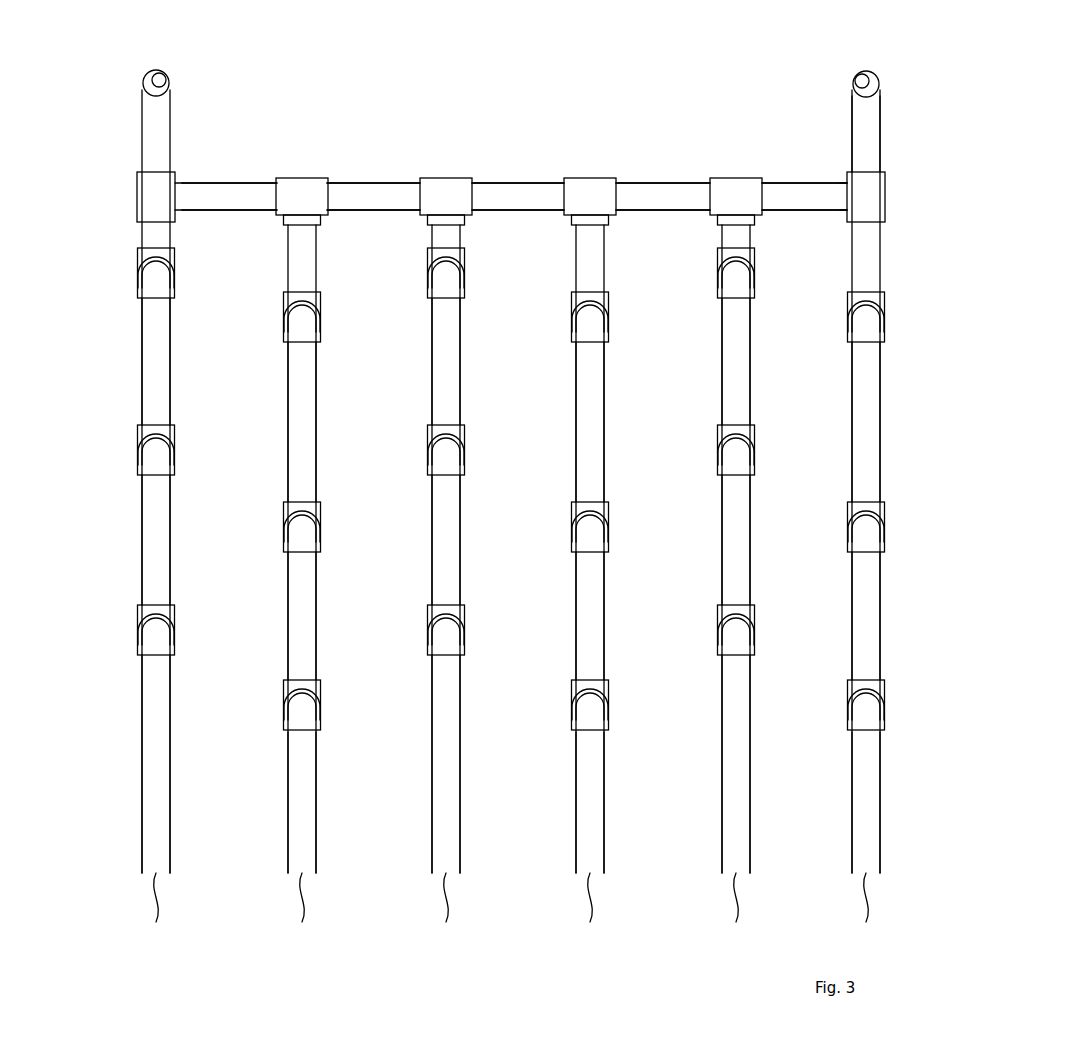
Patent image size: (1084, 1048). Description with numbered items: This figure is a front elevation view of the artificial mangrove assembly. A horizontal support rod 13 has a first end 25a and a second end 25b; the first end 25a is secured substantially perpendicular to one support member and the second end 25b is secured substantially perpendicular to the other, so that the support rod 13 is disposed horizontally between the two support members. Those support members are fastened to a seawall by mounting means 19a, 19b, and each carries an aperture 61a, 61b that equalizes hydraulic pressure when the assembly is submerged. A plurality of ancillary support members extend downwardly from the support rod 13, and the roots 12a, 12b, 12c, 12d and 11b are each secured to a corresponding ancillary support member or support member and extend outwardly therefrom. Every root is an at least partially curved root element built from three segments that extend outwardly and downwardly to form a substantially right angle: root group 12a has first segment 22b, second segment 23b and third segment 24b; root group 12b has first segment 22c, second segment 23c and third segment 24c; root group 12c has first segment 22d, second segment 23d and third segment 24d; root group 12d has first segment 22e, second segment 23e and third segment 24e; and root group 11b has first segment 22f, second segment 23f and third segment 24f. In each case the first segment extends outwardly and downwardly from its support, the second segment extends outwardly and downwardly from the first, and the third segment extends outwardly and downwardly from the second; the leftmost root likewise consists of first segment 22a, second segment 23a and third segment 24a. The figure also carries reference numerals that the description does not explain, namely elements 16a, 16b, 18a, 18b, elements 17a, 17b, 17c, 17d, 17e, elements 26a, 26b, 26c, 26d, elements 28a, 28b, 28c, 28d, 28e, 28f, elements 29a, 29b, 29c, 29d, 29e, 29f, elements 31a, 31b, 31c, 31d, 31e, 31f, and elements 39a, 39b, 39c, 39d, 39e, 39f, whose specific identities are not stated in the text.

The support rod 13 is at (500, 183).
The manifold section 17a is at (247, 183).
The manifold section 17b is at (392, 183).
The manifold section 17c is at (534, 183).
The manifold section 17d is at (680, 183).
The manifold section 17e is at (812, 183).
The tee fitting 26a is at (300, 178).
The tee fitting 26b is at (445, 178).
The tee fitting 26c is at (590, 178).
The tee fitting 26d is at (736, 178).
The elbow fitting 18a is at (142, 234).
The elbow fitting 18b is at (880, 258).
The end riser pipe 16a is at (142, 135).
The end riser pipe 16b is at (880, 135).
The mounting means 19a is at (156, 70).
The mounting means 19b is at (866, 71).
The aperture 61a is at (170, 83).
The aperture 61b is at (853, 84).
The first end 25a is at (177, 197).
The second end 25b is at (885, 197).
The root group 12a is at (279, 586).
The root group 12b is at (423, 586).
The root group 12c is at (567, 586).
The root group 12d is at (713, 586).
The root group 11b is at (843, 518).
The coupling 28a is at (137, 284).
The coupling 28b is at (283, 305).
The coupling 28c is at (427, 284).
The coupling 28d is at (571, 305).
The coupling 28e is at (717, 284).
The coupling 28f is at (847, 305).
The coupling 29a is at (137, 460).
The coupling 29b is at (283, 530).
The coupling 29c is at (427, 460).
The coupling 29d is at (571, 530).
The coupling 29e is at (717, 460).
The coupling 29f is at (847, 530).
The coupling 31a is at (137, 645).
The coupling 31b is at (283, 705).
The coupling 31c is at (427, 645).
The coupling 31d is at (571, 705).
The coupling 31e is at (717, 645).
The coupling 31f is at (847, 705).
The first segment 22a is at (142, 369).
The first segment 22b is at (288, 430).
The first segment 22c is at (432, 369).
The first segment 22d is at (576, 430).
The first segment 22e is at (722, 369).
The first segment 22f is at (852, 430).
The second segment 23a is at (142, 556).
The second segment 23b is at (288, 618).
The second segment 23c is at (432, 556).
The second segment 23d is at (576, 618).
The second segment 23e is at (722, 556).
The second segment 23f is at (852, 618).
The third segment 24a is at (142, 770).
The third segment 24b is at (288, 770).
The third segment 24c is at (432, 770).
The third segment 24d is at (576, 770).
The third segment 24e is at (722, 770).
The third segment 24f is at (852, 770).
The outlet stream 39a is at (151, 921).
The outlet stream 39b is at (297, 921).
The outlet stream 39c is at (440, 921).
The outlet stream 39d is at (585, 921).
The outlet stream 39e is at (729, 921).
The outlet stream 39f is at (858, 910).